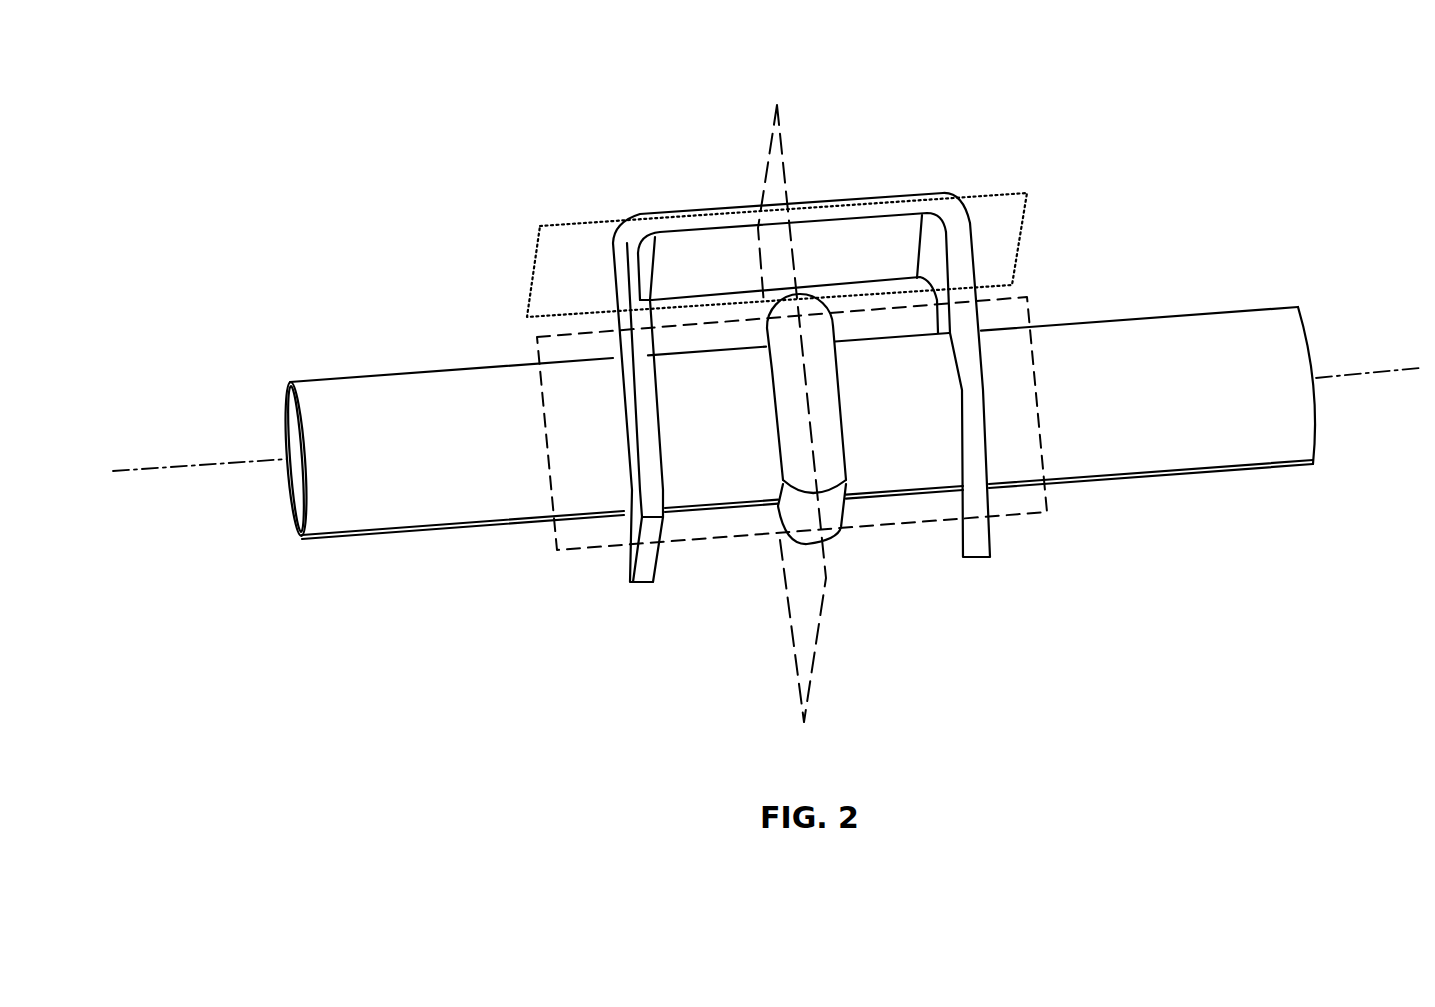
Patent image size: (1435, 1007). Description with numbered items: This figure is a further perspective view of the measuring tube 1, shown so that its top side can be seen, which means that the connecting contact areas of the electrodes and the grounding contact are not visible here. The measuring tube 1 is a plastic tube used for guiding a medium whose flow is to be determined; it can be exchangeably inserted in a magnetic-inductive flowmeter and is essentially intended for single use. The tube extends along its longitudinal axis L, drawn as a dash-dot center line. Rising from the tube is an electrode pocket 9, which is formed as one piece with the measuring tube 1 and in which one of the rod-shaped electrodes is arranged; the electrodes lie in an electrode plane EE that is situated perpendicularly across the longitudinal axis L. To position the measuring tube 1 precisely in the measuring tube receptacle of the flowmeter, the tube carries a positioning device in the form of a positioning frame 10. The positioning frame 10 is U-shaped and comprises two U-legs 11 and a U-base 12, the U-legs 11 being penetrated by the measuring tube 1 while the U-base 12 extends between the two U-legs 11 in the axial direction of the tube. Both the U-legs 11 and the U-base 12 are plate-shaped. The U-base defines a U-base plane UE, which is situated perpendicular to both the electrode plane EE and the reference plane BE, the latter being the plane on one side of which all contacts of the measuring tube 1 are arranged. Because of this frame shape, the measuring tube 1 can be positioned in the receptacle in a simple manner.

The measuring tube 1 is at (252, 344).
The electrode pocket 9 is at (830, 510).
The positioning frame 10 is at (877, 240).
The U-leg 11 is at (615, 313).
The U-base 12 is at (718, 258).
The longitudinal axis L is at (1380, 370).
The U-base plane UE is at (533, 275).
The reference plane BE is at (577, 553).
The electrode plane EE is at (790, 615).